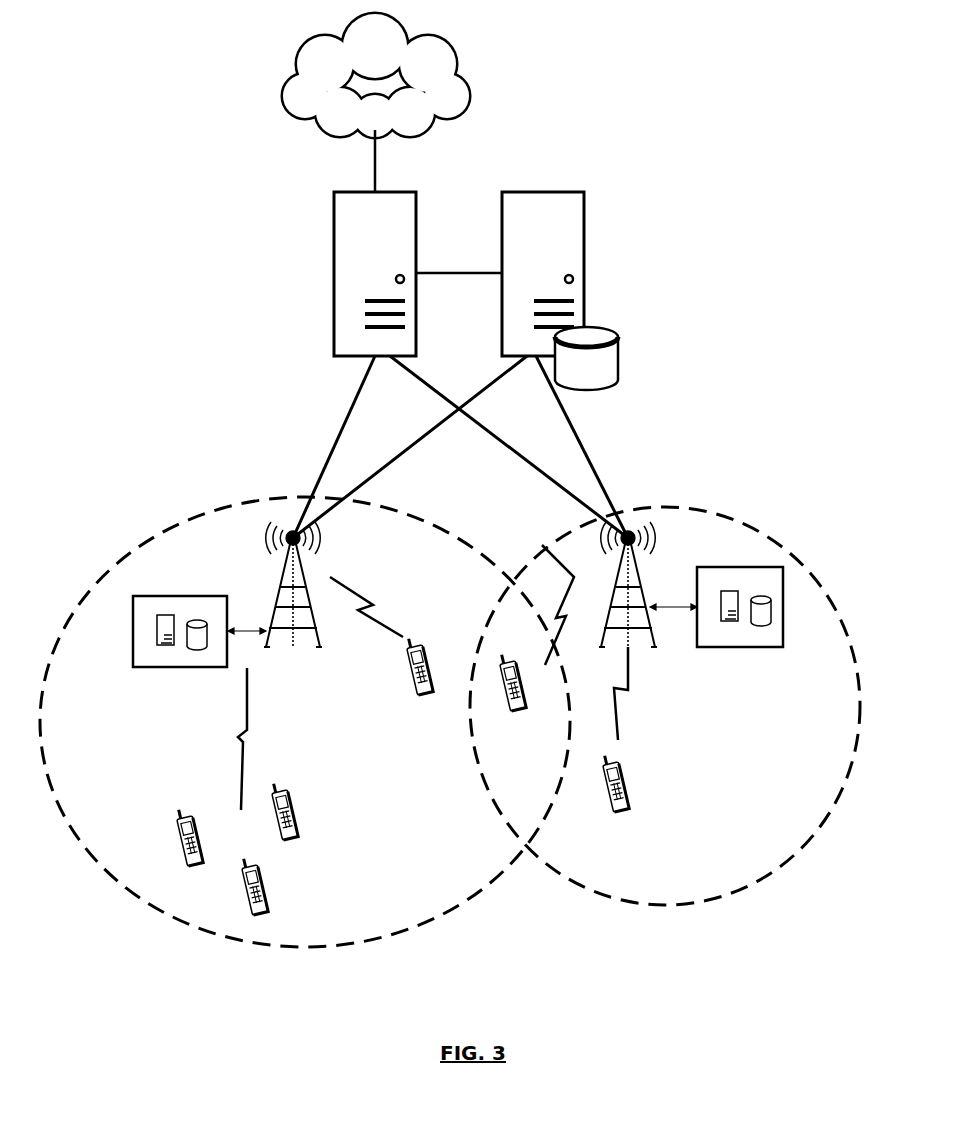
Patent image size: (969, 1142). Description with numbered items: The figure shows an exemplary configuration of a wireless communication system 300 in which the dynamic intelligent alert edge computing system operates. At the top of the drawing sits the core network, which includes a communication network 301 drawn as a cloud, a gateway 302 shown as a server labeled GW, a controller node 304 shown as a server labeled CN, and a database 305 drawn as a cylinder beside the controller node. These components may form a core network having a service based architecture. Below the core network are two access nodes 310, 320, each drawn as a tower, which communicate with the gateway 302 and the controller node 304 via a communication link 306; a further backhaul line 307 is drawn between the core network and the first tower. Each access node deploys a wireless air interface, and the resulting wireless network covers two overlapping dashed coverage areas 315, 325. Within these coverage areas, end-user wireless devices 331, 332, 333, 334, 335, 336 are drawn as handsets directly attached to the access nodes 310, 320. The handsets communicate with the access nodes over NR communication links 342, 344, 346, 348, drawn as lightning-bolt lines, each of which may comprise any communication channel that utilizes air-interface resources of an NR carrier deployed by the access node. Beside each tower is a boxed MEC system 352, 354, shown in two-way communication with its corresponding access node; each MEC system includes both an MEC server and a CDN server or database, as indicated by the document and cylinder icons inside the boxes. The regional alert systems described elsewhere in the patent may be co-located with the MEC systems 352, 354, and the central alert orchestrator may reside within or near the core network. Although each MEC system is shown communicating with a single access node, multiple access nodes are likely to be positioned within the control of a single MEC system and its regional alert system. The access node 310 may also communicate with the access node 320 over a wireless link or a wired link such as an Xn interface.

The wireless communication system 300 is at (550, 99).
The communication network 301 is at (376, 103).
The gateway 302 is at (334, 233).
The controller node 304 is at (584, 253).
The database 305 is at (618, 356).
The communication link 306 is at (442, 394).
The backhaul link between core network and first base station 307 is at (403, 451).
The access node 310 is at (275, 615).
The coverage area 315 is at (305, 939).
The access node 320 is at (640, 580).
The coverage area 325 is at (597, 890).
The end-user wireless device 331 is at (197, 867).
The end-user wireless device 332 is at (267, 887).
The end-user wireless device 333 is at (297, 817).
The end-user wireless device 334 is at (410, 693).
The end-user wireless device 335 is at (517, 715).
The end-user wireless device 336 is at (628, 813).
The NR communication link 342 is at (255, 732).
The NR communication link 344 is at (383, 630).
The NR communication link 346 is at (541, 546).
The NR communication link 348 is at (627, 695).
The MEC system 352 is at (203, 667).
The MEC system 354 is at (743, 647).